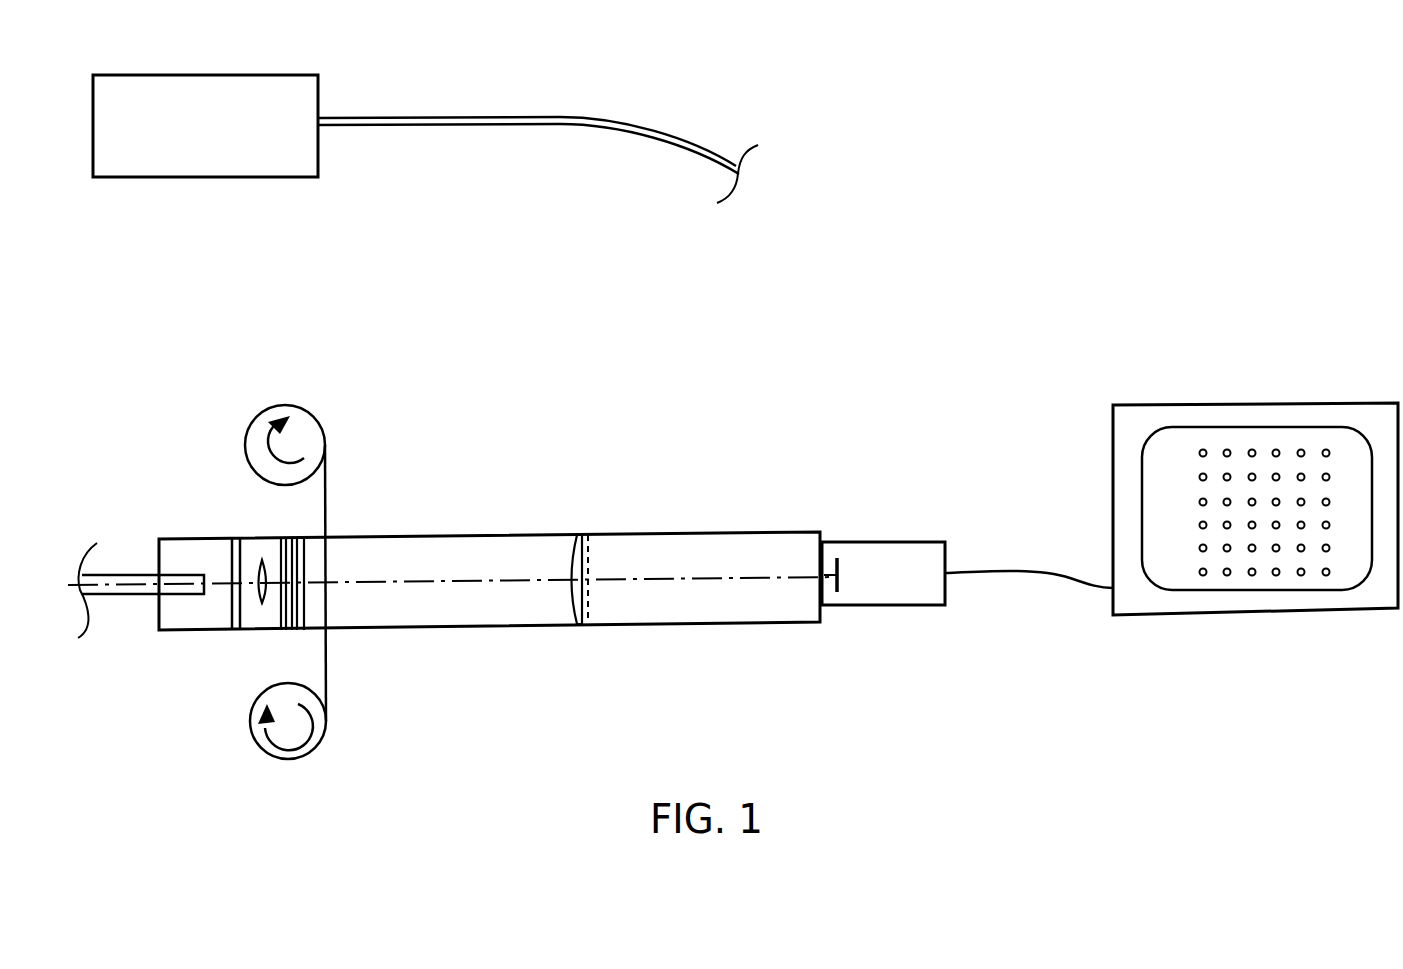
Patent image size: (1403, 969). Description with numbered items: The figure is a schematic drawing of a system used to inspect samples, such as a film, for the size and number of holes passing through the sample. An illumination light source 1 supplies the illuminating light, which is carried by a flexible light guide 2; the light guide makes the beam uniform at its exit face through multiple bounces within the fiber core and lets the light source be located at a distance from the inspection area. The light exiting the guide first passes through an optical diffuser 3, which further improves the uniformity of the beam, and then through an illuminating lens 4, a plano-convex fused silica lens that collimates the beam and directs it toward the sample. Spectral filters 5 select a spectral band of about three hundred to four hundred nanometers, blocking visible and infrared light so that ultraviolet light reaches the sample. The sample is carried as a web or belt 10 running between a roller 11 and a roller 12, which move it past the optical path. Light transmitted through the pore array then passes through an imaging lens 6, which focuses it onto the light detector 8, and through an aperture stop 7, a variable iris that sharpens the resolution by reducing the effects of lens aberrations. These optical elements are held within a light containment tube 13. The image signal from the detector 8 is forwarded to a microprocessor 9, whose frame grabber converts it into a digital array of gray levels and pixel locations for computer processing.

The illumination light source 1 is at (217, 75).
The light guide cable 2 is at (493, 116).
The optical diffuser 3 is at (231, 545).
The illuminating lens 4 is at (262, 562).
The spectral filters 5 is at (286, 621).
The imaging lens 6 is at (582, 536).
The aperture stop 7 is at (589, 613).
The light detector 8 is at (840, 562).
The microprocessor 9 is at (1233, 403).
The belt 10 is at (328, 490).
The roller 11 is at (305, 410).
The roller 12 is at (328, 733).
The light containment tube 13 is at (780, 623).